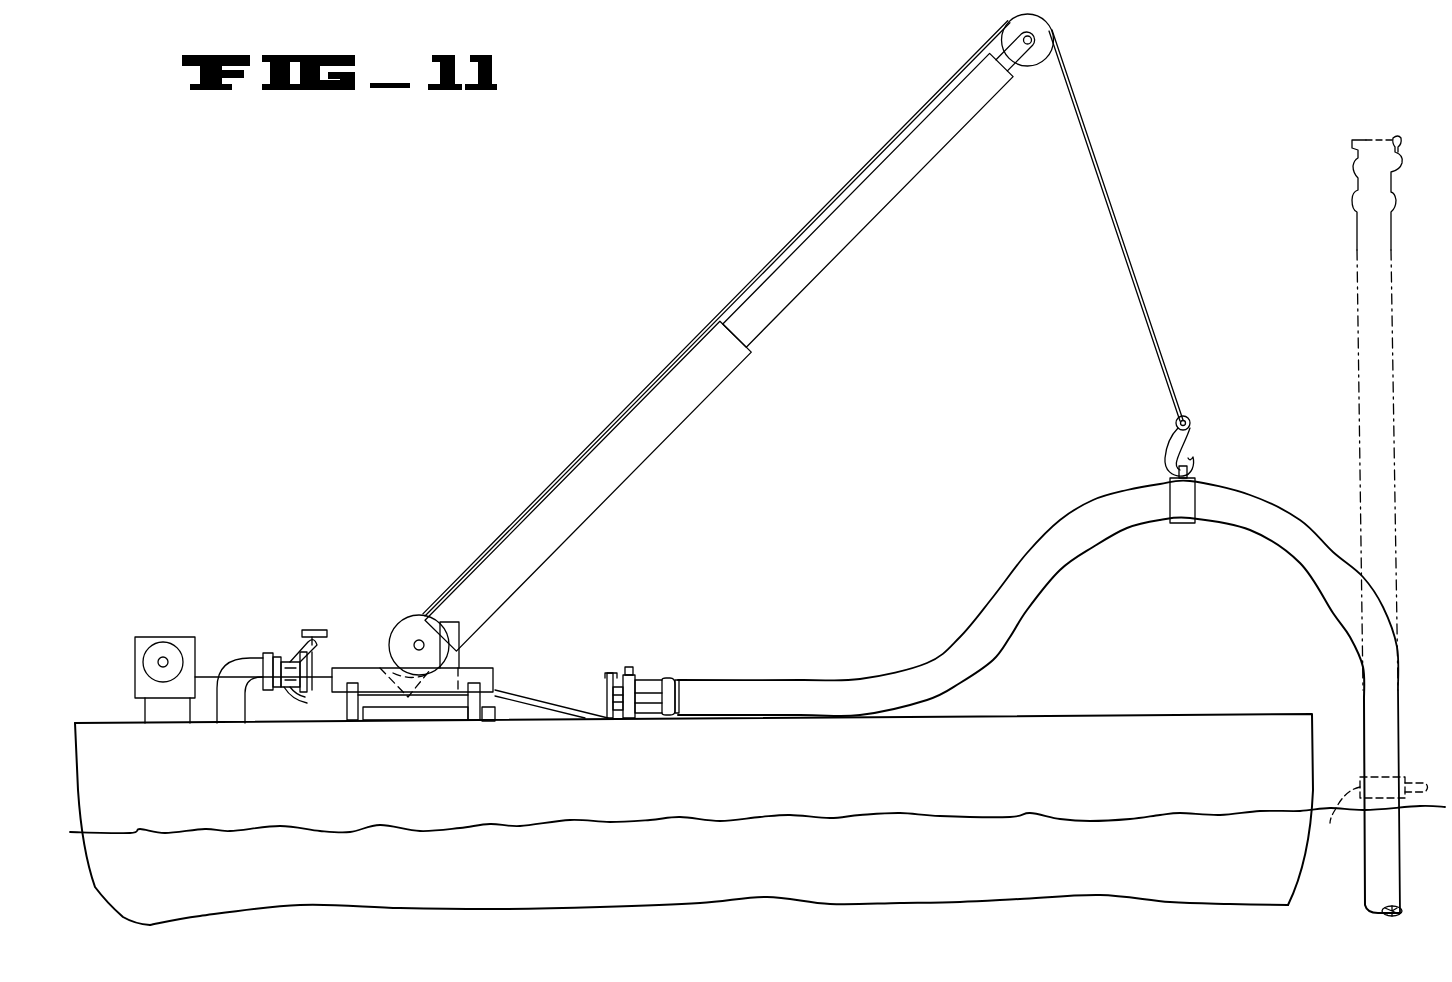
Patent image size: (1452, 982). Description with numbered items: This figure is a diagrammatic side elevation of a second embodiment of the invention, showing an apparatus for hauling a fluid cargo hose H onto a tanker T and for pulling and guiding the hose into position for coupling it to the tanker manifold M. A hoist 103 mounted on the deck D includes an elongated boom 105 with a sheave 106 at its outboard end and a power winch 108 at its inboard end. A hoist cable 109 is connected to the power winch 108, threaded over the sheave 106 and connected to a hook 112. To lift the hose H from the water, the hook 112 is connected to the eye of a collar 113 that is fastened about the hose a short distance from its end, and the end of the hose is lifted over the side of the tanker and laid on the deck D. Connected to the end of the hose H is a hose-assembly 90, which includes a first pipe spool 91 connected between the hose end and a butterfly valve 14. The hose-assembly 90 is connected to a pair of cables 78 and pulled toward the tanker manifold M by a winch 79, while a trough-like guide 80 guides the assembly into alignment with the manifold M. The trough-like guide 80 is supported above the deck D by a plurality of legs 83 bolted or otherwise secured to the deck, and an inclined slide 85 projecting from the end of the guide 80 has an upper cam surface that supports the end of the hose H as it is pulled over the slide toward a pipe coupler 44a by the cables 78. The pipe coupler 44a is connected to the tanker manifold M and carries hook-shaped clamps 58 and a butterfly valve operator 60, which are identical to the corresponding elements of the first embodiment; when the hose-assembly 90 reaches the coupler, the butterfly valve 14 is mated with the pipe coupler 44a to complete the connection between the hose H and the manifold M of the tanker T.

The butterfly valve 14 is at (625, 670).
The pipe coupler 44a is at (279, 652).
The hook-shaped clamps 58 is at (313, 650).
The butterfly valve operator 60 is at (311, 625).
The cables 78 is at (207, 672).
The winch 79 is at (166, 637).
The trough-like guide 80 is at (483, 661).
The legs 83 is at (470, 720).
The inclined slide 85 is at (567, 714).
The hose-assembly 90 is at (651, 673).
The first pipe spool 91 is at (650, 713).
The hoist 103 is at (658, 352).
The boom 105 is at (750, 346).
The sheave 106 is at (1036, 63).
The power winch 108 is at (410, 621).
The hoist cable 109 is at (1086, 149).
The hook 112 is at (1168, 462).
The collar 113 is at (1178, 483).
The hose H is at (1360, 467).
The deck D is at (1143, 713).
The tanker manifold M is at (221, 704).
The tanker T is at (792, 784).